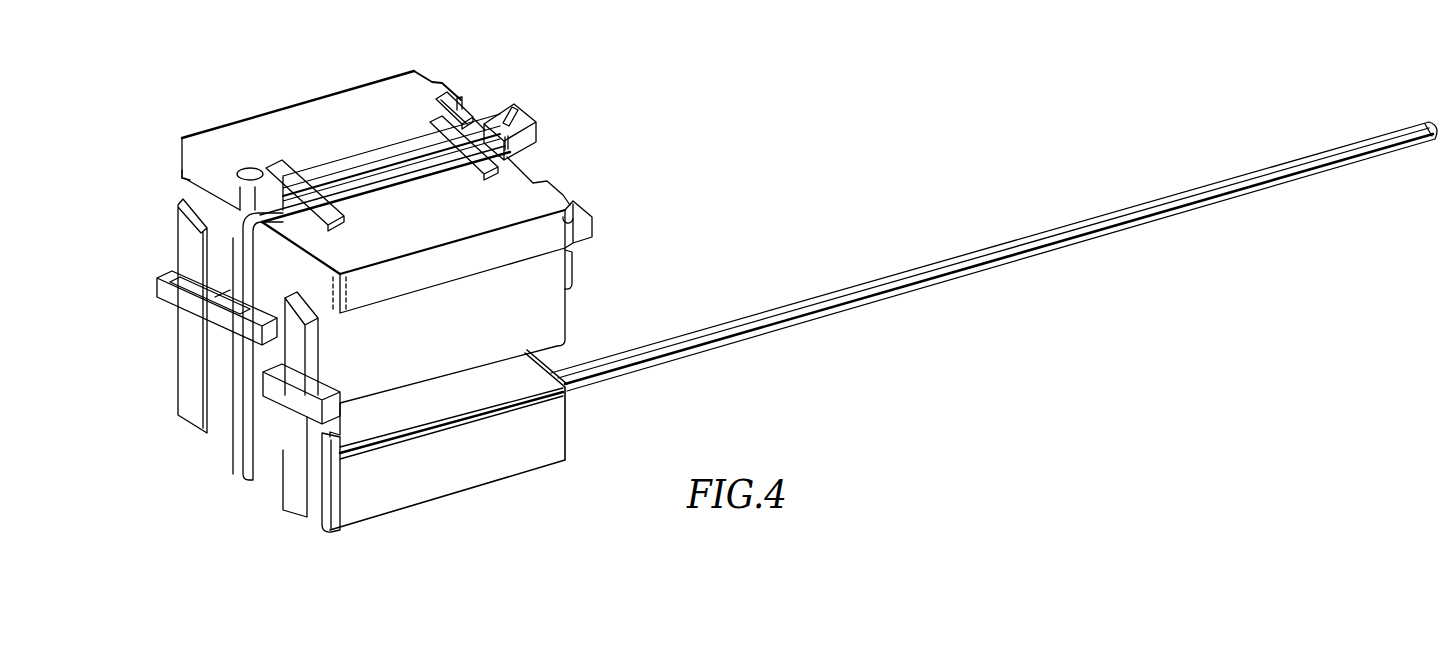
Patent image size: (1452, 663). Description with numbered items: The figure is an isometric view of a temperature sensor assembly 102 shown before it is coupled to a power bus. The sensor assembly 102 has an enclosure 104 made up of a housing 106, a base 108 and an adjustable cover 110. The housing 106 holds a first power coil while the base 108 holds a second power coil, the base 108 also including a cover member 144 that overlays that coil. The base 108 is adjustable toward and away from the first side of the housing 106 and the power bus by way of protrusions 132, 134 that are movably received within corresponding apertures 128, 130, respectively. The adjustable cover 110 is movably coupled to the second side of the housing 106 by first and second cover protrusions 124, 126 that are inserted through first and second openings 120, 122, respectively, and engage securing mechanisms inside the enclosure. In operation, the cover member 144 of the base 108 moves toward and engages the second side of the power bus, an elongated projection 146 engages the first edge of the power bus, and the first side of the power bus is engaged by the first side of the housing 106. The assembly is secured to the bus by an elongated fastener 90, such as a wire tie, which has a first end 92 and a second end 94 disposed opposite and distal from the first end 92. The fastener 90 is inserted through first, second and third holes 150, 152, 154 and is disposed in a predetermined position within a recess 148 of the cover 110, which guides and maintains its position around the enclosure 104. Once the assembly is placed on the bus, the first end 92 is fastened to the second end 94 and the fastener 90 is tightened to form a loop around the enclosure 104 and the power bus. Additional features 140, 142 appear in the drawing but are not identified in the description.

The elongated fastener 90 is at (360, 178).
The first end 92 is at (1424, 157).
The second end 94 is at (546, 107).
The sensor assembly 102 is at (482, 541).
The enclosure 104 is at (622, 134).
The housing 106 is at (548, 312).
The base 108 is at (546, 422).
The adjustable cover 110 is at (388, 88).
The first opening 120 is at (592, 222).
The second opening 122 is at (463, 105).
The first cover protrusion 124 is at (572, 258).
The second cover protrusion 126 is at (461, 98).
The aperture 128 is at (294, 375).
The aperture 130 is at (188, 287).
The protrusion 132 is at (298, 338).
The protrusion 134 is at (183, 223).
The front slot 140 is at (336, 313).
The cover corner 142 is at (182, 172).
The cover member 144 is at (437, 404).
The elongated projection 146 is at (342, 440).
The recess 148 is at (403, 158).
The first hole 150 is at (237, 298).
The second hole 152 is at (289, 168).
The third hole 154 is at (455, 173).